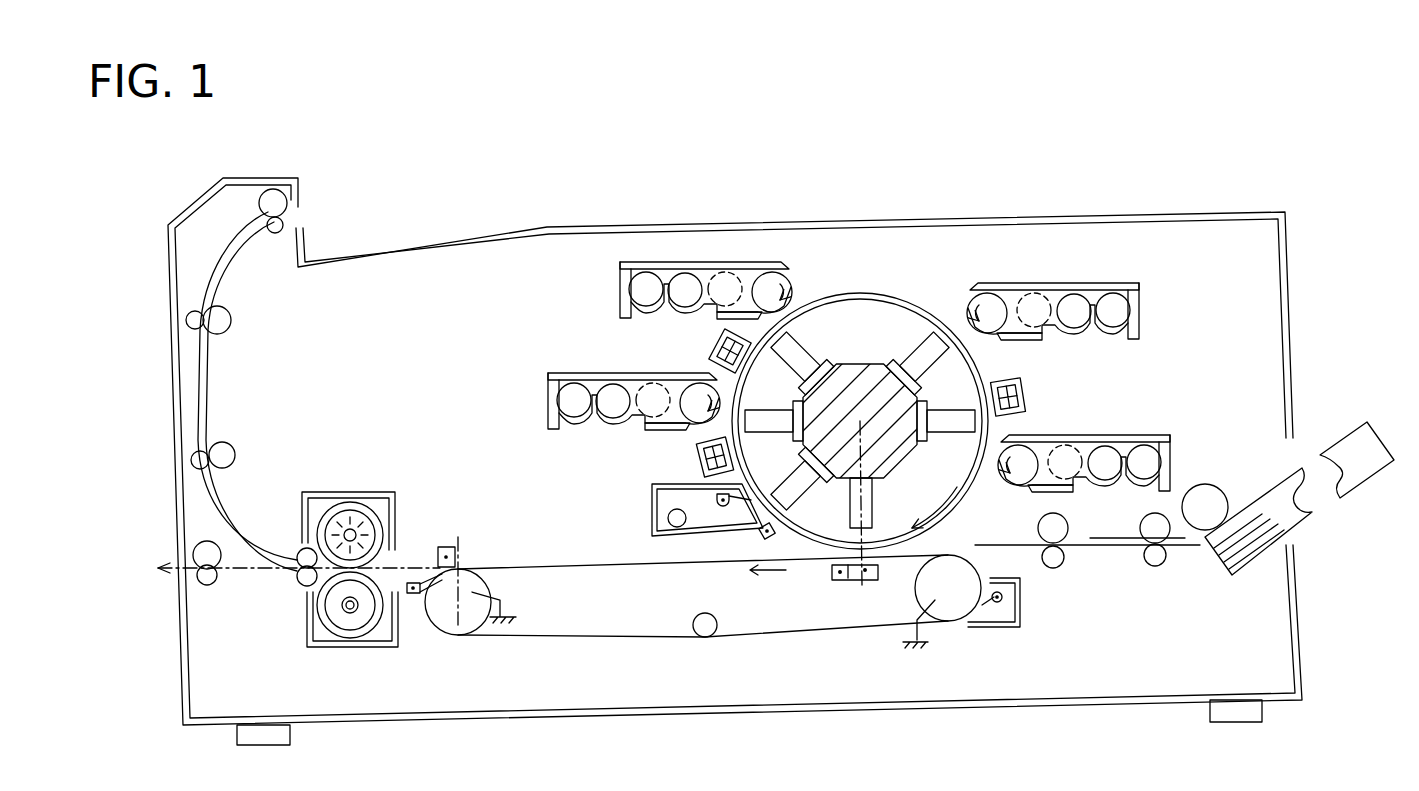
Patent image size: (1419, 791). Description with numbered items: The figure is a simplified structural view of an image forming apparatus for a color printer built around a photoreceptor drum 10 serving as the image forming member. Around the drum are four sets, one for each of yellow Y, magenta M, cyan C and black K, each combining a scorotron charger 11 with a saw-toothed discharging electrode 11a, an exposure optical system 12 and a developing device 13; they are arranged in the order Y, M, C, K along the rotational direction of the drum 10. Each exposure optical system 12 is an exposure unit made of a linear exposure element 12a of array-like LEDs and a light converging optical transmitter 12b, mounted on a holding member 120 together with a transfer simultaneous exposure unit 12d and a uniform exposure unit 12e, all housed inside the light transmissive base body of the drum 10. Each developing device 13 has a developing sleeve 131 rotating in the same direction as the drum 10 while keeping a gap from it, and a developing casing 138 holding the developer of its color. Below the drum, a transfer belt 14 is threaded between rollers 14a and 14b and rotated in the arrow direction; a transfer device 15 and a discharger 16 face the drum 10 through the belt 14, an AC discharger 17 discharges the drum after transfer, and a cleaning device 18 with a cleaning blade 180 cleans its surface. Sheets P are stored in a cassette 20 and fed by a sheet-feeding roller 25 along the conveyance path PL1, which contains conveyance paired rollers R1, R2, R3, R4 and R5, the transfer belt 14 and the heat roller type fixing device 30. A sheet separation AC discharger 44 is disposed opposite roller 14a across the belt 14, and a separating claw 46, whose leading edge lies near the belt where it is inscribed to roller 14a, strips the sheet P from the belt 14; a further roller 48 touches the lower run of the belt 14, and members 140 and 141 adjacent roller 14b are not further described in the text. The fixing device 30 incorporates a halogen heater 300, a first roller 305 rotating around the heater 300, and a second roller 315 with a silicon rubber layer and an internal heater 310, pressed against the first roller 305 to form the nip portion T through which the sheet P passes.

The photoreceptor drum 10 is at (956, 292).
The scorotron charger 11 is at (713, 340).
The discharging electrode 11a is at (706, 352).
The exposure optical system 12 is at (765, 408).
The linear exposure element 12a is at (838, 368).
The light converging optical transmitter 12b is at (800, 346).
The transfer simultaneous exposure unit 12d is at (873, 500).
The uniform exposure unit 12e is at (778, 486).
The developing device 13 is at (1143, 300).
The transfer belt 14 is at (607, 638).
The roller 14a is at (462, 636).
The roller 14b is at (948, 622).
The transfer device 15 is at (864, 582).
The discharger 16 is at (840, 582).
The AC discharger 17 is at (792, 548).
The cleaning device 18 is at (652, 510).
The paper feed cassette 20 is at (1299, 467).
The sheet-feeding roller 25 is at (1226, 497).
The fixing device 30 is at (396, 505).
The sheet separation AC discharger 44 is at (440, 547).
The separating claw 46 is at (414, 595).
The tension roller 48 is at (705, 638).
The holding member 120 is at (905, 452).
The developing sleeve 131 is at (996, 292).
The developing casing 138 is at (1140, 318).
The belt cleaner 140 is at (1022, 600).
The cleaning blade 141 is at (998, 603).
The cleaning blade 180 is at (760, 490).
The halogen heater 300 is at (346, 520).
The first roller 305 is at (353, 565).
The heater 310 is at (344, 610).
The second roller 315 is at (372, 650).
The cyan C is at (1070, 280).
The black K is at (1087, 425).
The magenta M is at (588, 325).
The yellow Y is at (560, 452).
The sheet P is at (1280, 500).
The paper path PL1 is at (543, 563).
The conveyance paired rollers R1 is at (1160, 565).
The conveyance paired rollers R2 is at (1068, 550).
The conveyance paired rollers R3 is at (226, 444).
The conveyance paired rollers R4 is at (228, 333).
The conveyance paired rollers R5 is at (298, 224).
The nip portion T is at (342, 600).